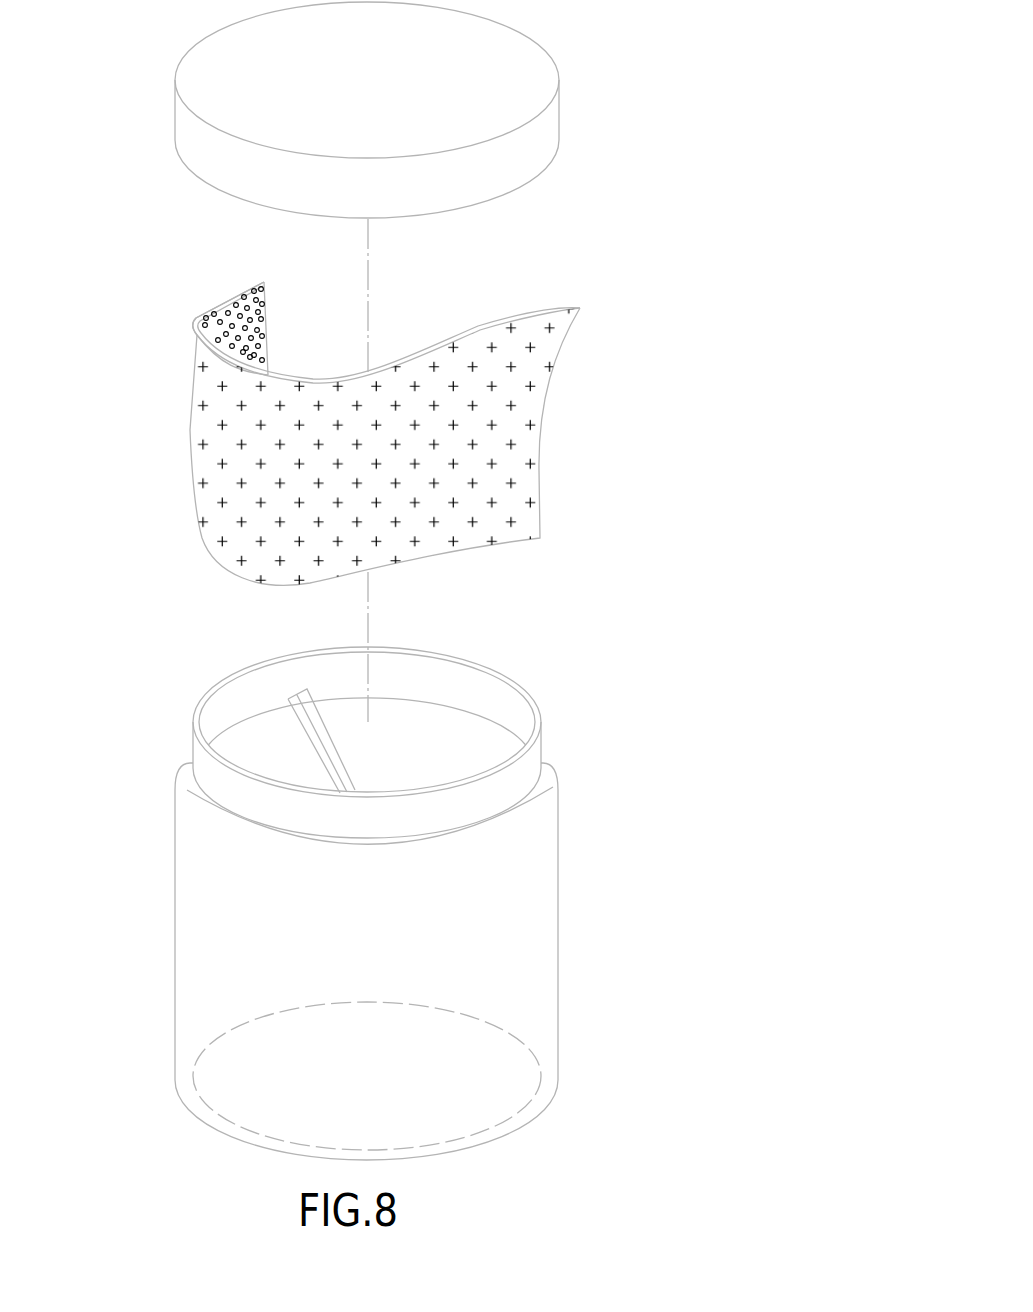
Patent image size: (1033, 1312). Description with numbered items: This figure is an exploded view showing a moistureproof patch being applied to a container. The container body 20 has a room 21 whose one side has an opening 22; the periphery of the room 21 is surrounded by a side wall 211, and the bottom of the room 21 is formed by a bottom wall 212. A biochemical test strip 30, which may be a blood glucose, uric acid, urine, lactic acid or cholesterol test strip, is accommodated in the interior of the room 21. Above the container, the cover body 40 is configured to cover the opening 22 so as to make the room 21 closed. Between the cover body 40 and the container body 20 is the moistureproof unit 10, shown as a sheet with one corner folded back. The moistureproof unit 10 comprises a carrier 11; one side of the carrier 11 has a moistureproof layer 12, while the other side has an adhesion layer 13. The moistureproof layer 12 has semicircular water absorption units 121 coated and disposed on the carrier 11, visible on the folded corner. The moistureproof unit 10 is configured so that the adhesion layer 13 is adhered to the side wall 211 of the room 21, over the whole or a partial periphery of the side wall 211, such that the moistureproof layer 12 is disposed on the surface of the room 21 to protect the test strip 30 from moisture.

The moistureproof unit 10 is at (176, 450).
The carrier 11 is at (577, 313).
The moistureproof layer 12 is at (242, 298).
The semicircular water absorption units 121 is at (226, 322).
The adhesion layer 13 is at (528, 445).
The container body 20 is at (543, 963).
The room 21 is at (258, 740).
The side wall 211 is at (485, 753).
The bottom wall 212 is at (490, 1115).
The opening 22 is at (490, 668).
The biochemical test strip 30 is at (290, 702).
The cover body 40 is at (512, 65).